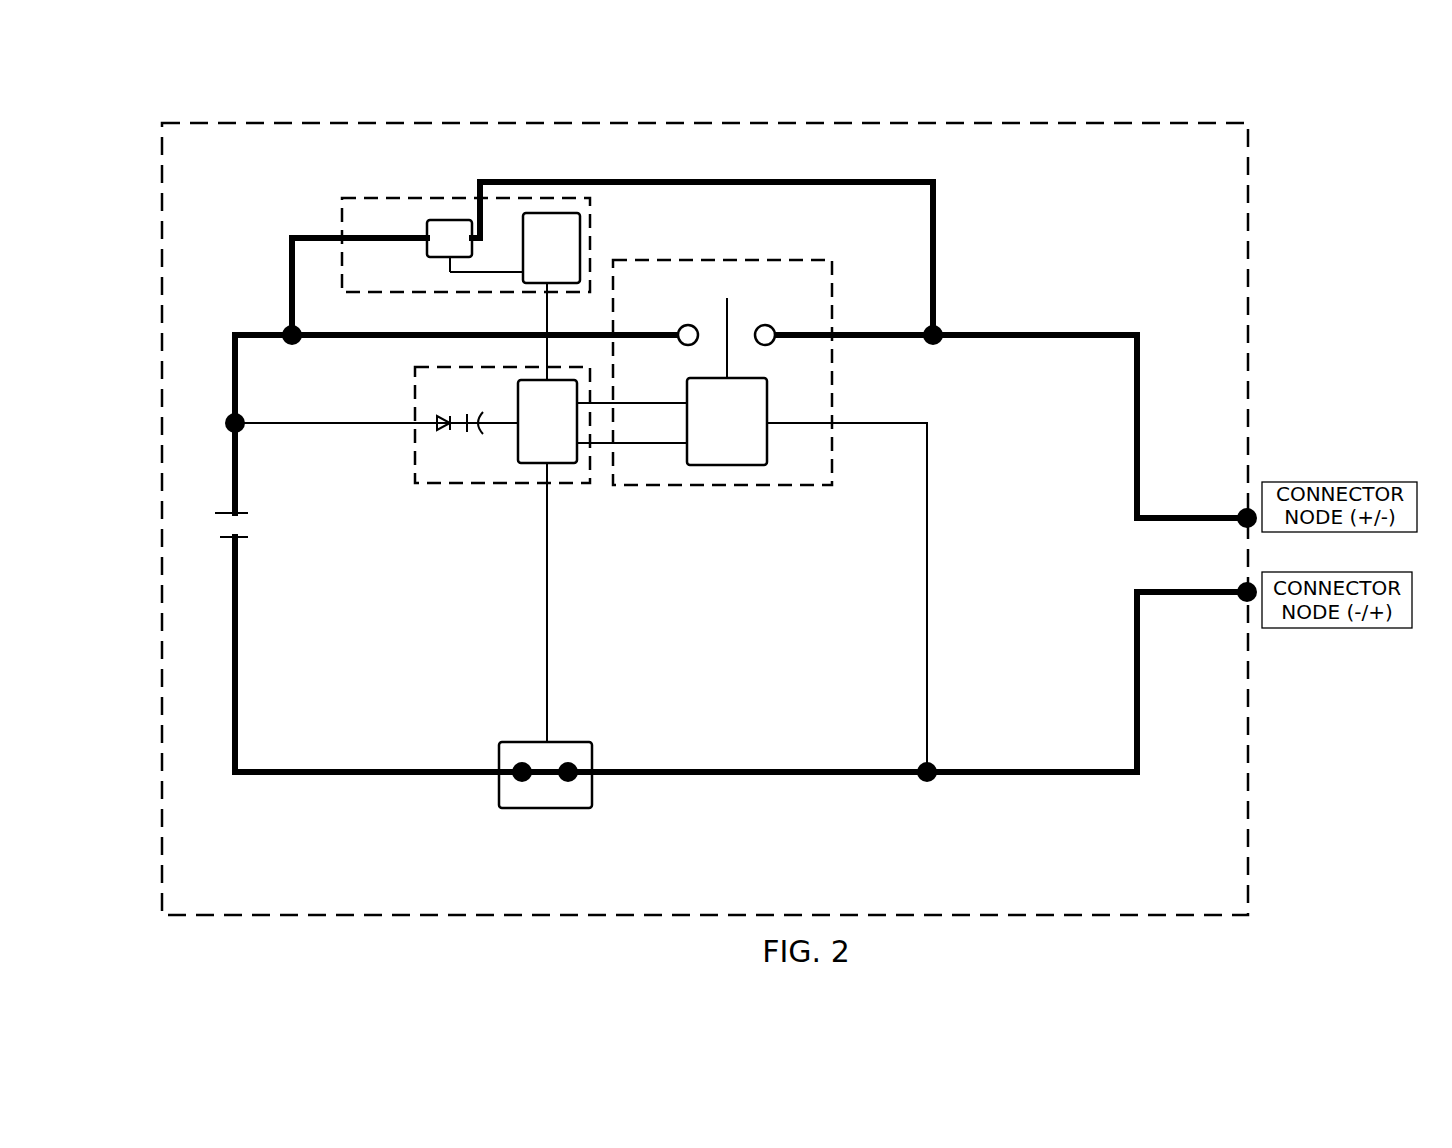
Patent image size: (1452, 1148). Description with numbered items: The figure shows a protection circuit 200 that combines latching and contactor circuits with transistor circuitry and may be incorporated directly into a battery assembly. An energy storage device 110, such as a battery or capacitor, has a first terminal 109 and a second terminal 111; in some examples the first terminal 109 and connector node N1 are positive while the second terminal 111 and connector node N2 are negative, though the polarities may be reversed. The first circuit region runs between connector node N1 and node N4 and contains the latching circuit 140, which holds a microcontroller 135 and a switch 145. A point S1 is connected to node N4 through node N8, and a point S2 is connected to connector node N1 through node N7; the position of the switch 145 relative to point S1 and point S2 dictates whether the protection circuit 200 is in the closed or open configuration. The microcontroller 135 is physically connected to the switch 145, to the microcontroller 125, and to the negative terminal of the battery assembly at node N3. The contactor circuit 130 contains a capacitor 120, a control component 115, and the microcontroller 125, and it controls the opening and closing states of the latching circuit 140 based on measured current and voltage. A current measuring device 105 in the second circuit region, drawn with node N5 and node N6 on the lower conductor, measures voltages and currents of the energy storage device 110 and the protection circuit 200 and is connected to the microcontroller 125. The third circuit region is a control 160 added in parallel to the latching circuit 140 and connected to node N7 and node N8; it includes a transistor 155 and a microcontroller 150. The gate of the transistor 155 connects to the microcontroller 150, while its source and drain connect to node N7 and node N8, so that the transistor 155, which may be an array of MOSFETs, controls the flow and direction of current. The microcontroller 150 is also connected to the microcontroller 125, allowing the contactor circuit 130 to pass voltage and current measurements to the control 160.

The protection circuit 200 is at (1312, 76).
The current measuring device 105 is at (619, 721).
The first terminal 109 is at (256, 517).
The energy storage device 110 is at (211, 524).
The second terminal 111 is at (252, 531).
The control component 115 is at (435, 437).
The capacitor 120 is at (478, 413).
The microcontroller 125 is at (547, 421).
The contactor circuit 130 is at (513, 472).
The microcontroller 135 is at (727, 421).
The latching circuit 140 is at (793, 475).
The switch 145 is at (727, 328).
The microcontroller 150 is at (551, 248).
The transistor 155 is at (475, 246).
The control 160 is at (432, 172).
The connector node N1 is at (1235, 510).
The connector node N2 is at (1235, 584).
The node N3 is at (915, 763).
The node N4 is at (248, 415).
The node N5 is at (520, 783).
The node N6 is at (568, 783).
The node N7 is at (922, 326).
The node N8 is at (302, 325).
The point S1 is at (676, 326).
The point S2 is at (780, 326).